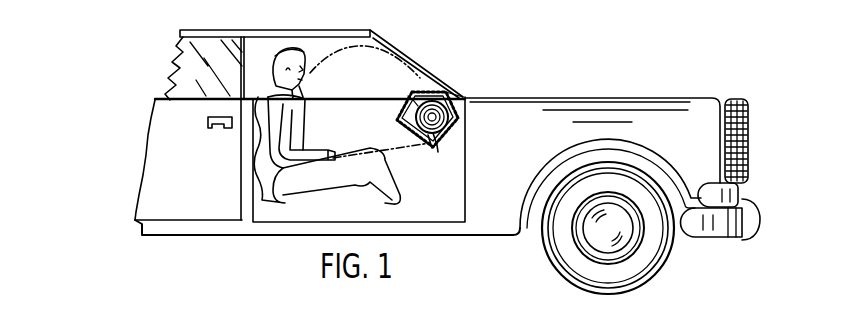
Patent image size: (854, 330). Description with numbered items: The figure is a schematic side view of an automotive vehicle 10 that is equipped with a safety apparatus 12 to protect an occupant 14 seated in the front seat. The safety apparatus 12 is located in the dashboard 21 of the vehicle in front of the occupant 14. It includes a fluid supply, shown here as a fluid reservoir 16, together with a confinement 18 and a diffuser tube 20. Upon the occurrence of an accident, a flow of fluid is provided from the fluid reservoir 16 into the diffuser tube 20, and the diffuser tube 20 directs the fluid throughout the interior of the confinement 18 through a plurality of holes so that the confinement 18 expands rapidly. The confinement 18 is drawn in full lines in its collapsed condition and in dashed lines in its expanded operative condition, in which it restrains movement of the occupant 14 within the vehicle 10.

The automotive vehicle 10 is at (593, 46).
The safety apparatus 12 is at (459, 95).
The occupant 14 is at (267, 93).
The fluid reservoir 16 is at (434, 144).
The confinement 18 is at (418, 75).
The diffuser tube 20 is at (444, 108).
The dashboard 21 is at (412, 98).